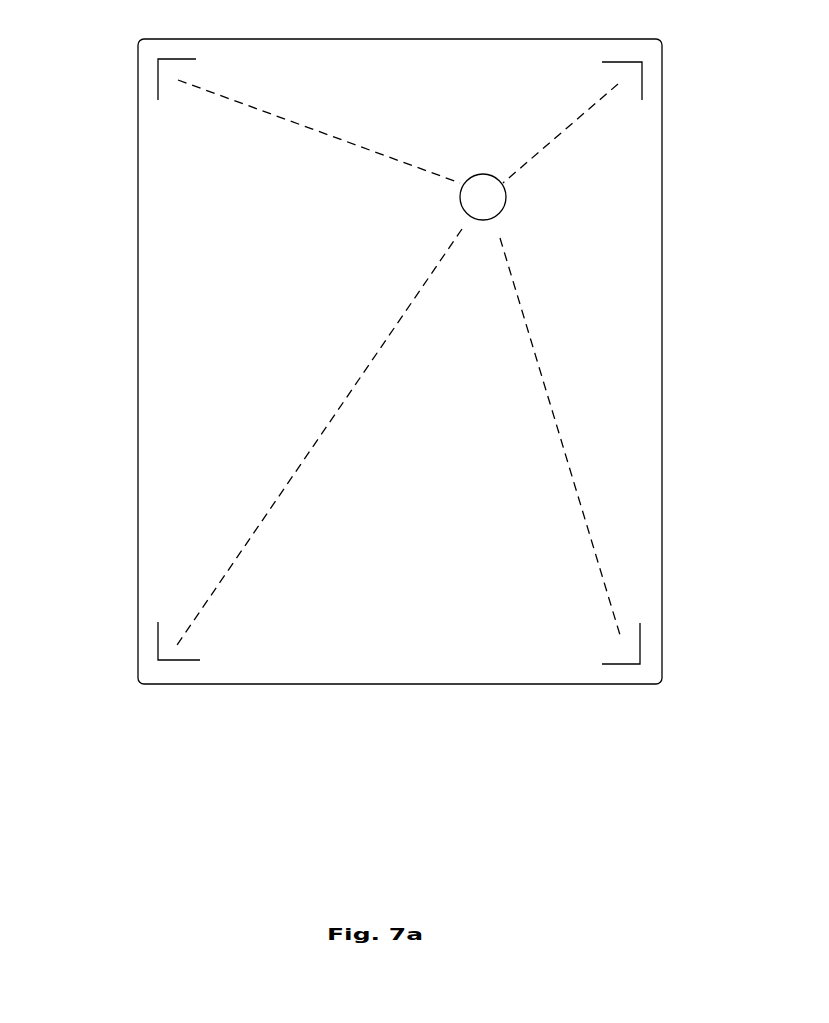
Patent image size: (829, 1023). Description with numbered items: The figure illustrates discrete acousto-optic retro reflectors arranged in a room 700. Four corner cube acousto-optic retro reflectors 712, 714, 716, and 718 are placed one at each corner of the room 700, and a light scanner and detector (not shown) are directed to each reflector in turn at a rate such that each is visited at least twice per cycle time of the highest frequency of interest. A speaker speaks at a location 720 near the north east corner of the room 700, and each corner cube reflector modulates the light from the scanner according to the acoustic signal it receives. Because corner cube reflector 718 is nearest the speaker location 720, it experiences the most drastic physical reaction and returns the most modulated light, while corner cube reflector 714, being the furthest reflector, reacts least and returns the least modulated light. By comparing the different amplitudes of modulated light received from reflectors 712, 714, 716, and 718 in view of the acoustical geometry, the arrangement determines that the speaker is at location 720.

The room 700 is at (138, 42).
The corner cube acousto-optic retro reflector 712 is at (158, 100).
The corner cube acousto-optic retro reflector 714 is at (158, 645).
The corner cube acousto-optic retro reflector 716 is at (640, 647).
The corner cube acousto-optic retro reflector 718 is at (642, 85).
The speaker location 720 is at (478, 174).